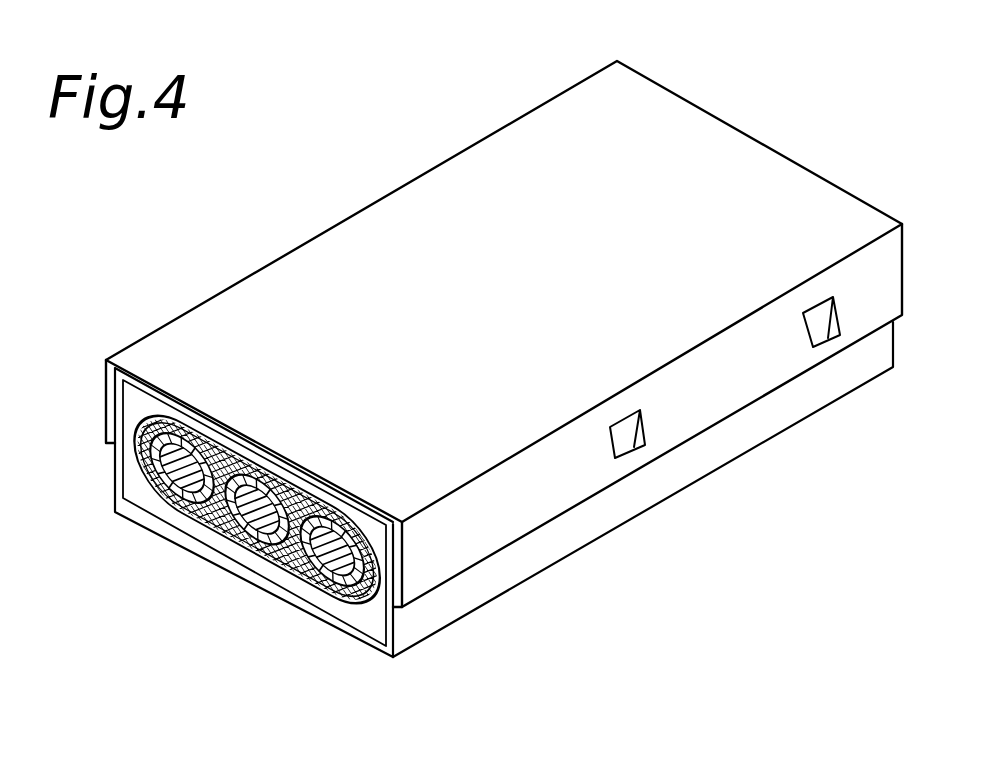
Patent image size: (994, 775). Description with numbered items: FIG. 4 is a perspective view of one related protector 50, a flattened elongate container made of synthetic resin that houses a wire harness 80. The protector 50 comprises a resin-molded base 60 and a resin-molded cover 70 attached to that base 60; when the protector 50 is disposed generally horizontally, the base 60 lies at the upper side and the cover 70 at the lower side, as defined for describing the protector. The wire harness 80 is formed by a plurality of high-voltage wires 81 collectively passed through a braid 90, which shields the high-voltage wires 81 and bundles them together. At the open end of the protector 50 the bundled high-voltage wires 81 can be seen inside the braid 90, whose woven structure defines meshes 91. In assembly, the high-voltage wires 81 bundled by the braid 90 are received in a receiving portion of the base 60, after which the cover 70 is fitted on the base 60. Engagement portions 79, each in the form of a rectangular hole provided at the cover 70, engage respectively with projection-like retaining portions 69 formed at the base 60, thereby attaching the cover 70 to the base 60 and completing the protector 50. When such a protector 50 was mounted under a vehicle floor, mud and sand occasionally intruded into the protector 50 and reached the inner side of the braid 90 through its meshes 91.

The protector 50 is at (504, 391).
The resin-molded base 60 is at (505, 618).
The resin-molded cover 70 is at (532, 501).
The retaining portion 69 is at (640, 448).
The engaging hole 79 is at (641, 413).
The wire harness 80 is at (245, 489).
The high-voltage wires 81 is at (335, 578).
The braid 90 is at (353, 600).
The meshes 91 is at (375, 523).